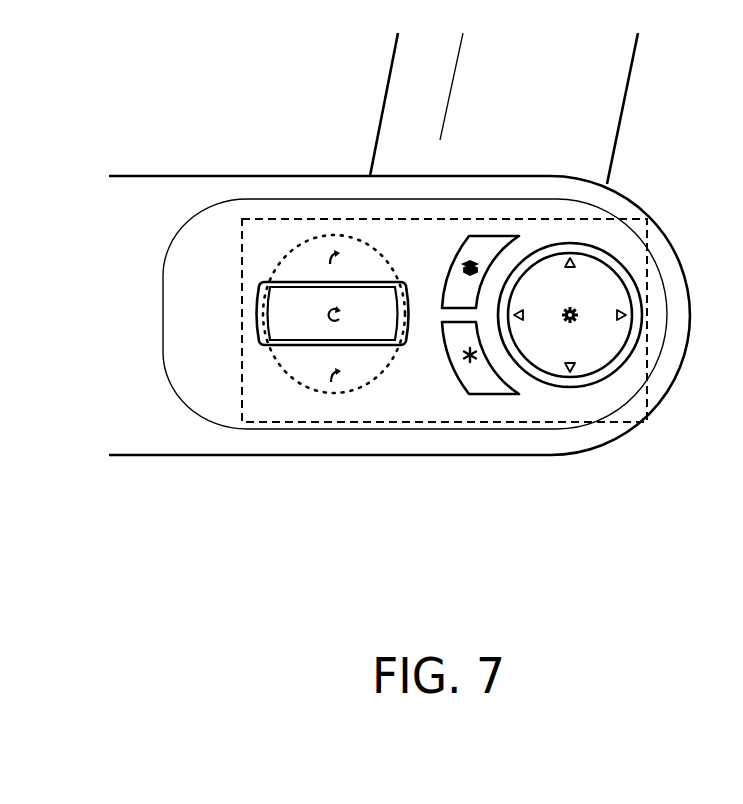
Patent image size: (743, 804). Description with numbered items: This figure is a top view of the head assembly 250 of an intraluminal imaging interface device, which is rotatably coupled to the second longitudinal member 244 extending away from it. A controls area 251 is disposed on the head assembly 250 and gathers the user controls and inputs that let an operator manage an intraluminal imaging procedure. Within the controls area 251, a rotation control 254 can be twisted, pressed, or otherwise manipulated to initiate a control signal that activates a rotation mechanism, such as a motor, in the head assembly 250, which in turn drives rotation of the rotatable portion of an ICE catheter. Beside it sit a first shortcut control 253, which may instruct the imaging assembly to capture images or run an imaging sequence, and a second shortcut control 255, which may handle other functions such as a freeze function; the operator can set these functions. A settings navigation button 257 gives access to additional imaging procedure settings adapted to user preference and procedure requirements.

The second longitudinal member 244 is at (545, 101).
The head assembly 250 is at (157, 329).
The controls area 251 is at (240, 266).
The first shortcut control 253 is at (475, 253).
The rotation control 254 is at (295, 300).
The second shortcut control 255 is at (477, 375).
The settings navigation button 257 is at (593, 363).